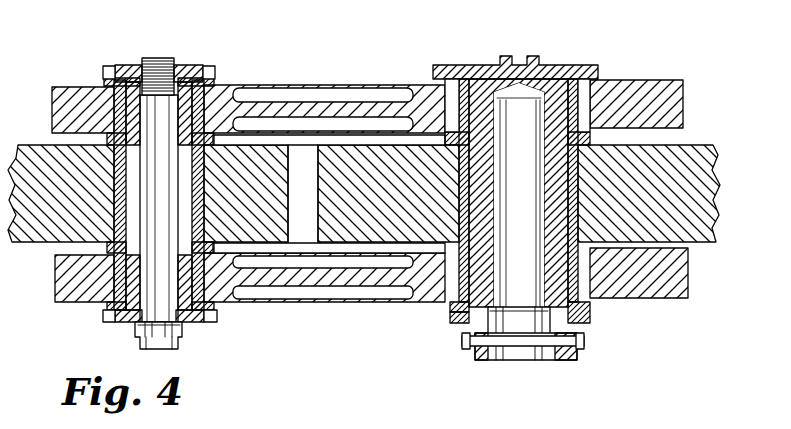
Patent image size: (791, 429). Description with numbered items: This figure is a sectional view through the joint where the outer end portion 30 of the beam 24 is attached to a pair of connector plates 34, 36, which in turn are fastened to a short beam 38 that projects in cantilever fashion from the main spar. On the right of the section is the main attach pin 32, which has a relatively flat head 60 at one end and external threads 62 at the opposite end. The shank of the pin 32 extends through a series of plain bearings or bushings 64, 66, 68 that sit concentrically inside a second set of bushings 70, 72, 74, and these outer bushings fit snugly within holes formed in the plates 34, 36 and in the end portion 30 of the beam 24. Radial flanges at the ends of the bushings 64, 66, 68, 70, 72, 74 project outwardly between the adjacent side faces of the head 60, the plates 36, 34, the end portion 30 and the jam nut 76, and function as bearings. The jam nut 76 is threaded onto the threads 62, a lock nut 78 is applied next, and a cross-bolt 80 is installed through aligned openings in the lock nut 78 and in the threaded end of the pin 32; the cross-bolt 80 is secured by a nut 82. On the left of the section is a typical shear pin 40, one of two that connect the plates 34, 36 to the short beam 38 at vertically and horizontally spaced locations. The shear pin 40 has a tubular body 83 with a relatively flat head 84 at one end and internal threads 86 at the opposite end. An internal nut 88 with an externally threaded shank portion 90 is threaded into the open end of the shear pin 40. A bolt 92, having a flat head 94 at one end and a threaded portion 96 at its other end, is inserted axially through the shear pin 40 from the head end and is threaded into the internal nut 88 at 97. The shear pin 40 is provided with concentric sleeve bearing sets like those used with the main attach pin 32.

The beam 24 is at (700, 228).
The outer end portion of beam 30 is at (347, 245).
The main attach pin 32 is at (553, 70).
The connector plate 34 is at (280, 280).
The connector plate 36 is at (324, 93).
The short beam 38 is at (27, 247).
The shear pin 40 is at (143, 195).
The flat head 60 is at (438, 66).
The external threads 62 is at (577, 355).
The bushing 64 is at (583, 90).
The bushing 66 is at (620, 92).
The bushing 68 is at (566, 287).
The bushing 70 is at (453, 100).
The bushing 72 is at (458, 188).
The bushing 74 is at (441, 300).
The jam nut 76 is at (458, 320).
The lock nut 78 is at (465, 349).
The cross-bolt 80 is at (530, 345).
The nut 82 is at (458, 342).
The tubular body 83 is at (237, 93).
The washer 84 is at (206, 322).
The internal threads 86 is at (106, 79).
The internal nut 88 is at (128, 66).
The externally threaded shank portion 90 is at (213, 85).
The bolt 92 is at (98, 302).
The flat head 94 is at (144, 347).
The threaded portion 96 is at (167, 58).
The threaded connection 97 is at (190, 65).